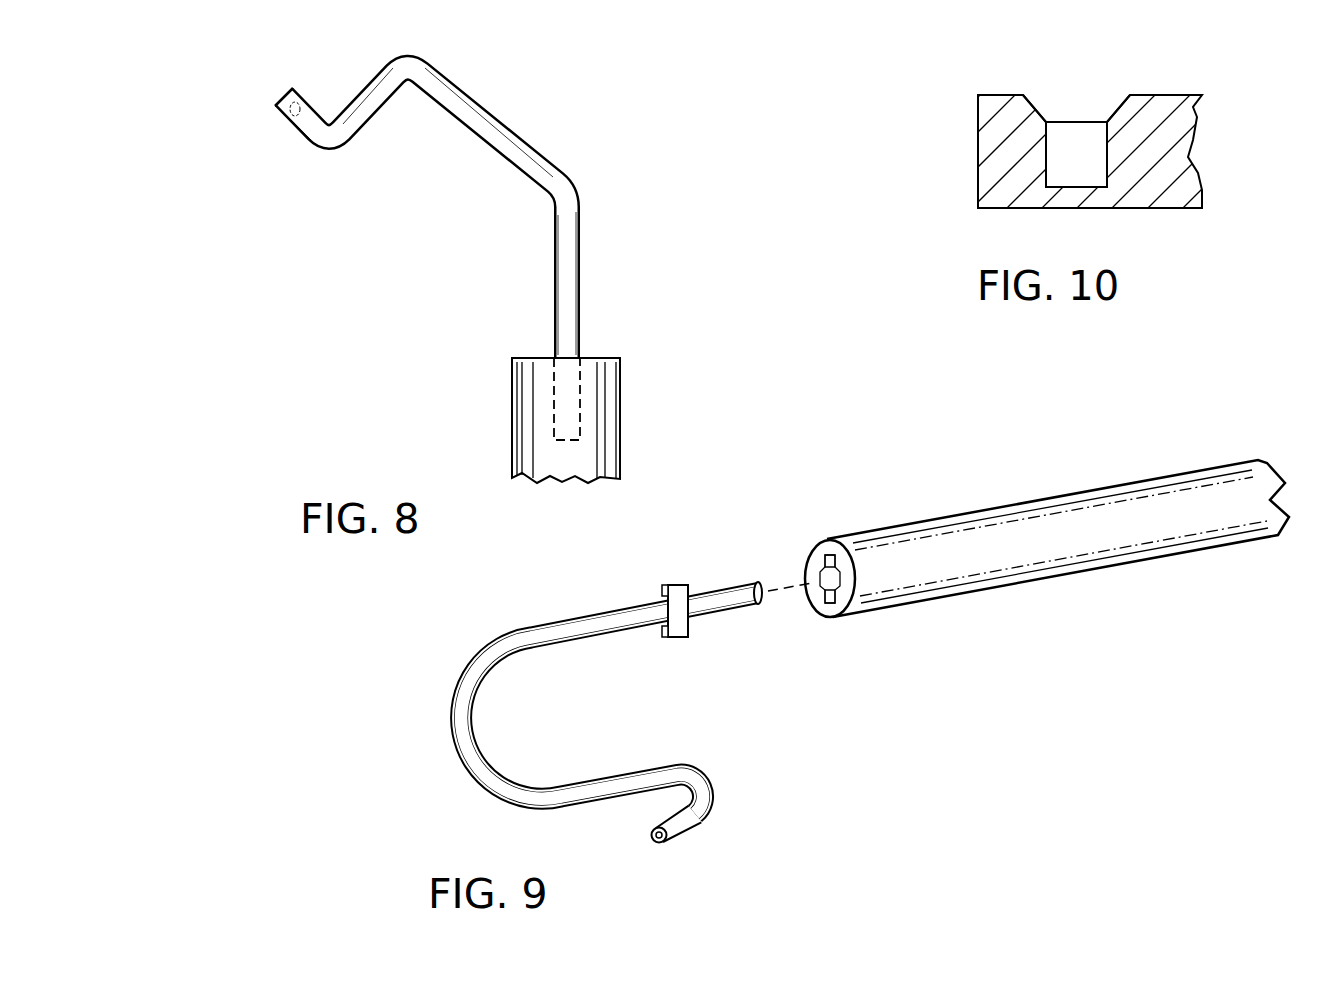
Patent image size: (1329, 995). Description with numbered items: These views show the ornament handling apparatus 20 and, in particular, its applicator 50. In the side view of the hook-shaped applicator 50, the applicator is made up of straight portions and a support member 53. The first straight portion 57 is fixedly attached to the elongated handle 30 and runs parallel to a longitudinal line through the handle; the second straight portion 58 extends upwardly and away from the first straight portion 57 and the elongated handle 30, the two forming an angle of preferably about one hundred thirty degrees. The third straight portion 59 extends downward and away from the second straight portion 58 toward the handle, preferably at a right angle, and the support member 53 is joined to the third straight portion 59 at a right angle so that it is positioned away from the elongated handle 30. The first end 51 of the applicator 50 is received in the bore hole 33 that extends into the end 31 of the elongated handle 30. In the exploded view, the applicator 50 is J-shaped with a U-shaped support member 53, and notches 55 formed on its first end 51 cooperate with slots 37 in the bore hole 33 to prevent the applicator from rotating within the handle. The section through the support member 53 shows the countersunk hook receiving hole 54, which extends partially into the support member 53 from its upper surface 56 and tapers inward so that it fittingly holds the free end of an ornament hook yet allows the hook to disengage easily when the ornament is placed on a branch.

In FIG. 9, the ornament handling apparatus 20 is at (875, 627).
In FIG. 8, the elongated handle 30 is at (605, 375).
In FIG. 9, the elongated handle 30 is at (1050, 508).
In FIG. 8, the end of elongated handle 31 is at (537, 357).
In FIG. 9, the bore hole 33 is at (846, 578).
In FIG. 9, the slots 37 is at (824, 568).
In FIG. 8, the applicator 50 is at (557, 177).
In FIG. 8, the first end of applicator 51 is at (565, 440).
In FIG. 8, the support member 53 is at (317, 130).
In FIG. 10, the support member 53 is at (1172, 138).
In FIG. 9, the support member 53 is at (707, 810).
In FIG. 8, the hook receiving hole 54 is at (298, 127).
In FIG. 10, the hook receiving hole 54 is at (1080, 135).
In FIG. 9, the hook receiving hole 54 is at (651, 834).
In FIG. 9, the notches 55 is at (673, 584).
In FIG. 8, the upper surface 56 is at (320, 117).
In FIG. 10, the upper surface 56 is at (1000, 95).
In FIG. 8, the first straight portion 57 is at (566, 313).
In FIG. 8, the second straight portion 58 is at (483, 130).
In FIG. 8, the third straight portion 59 is at (368, 105).